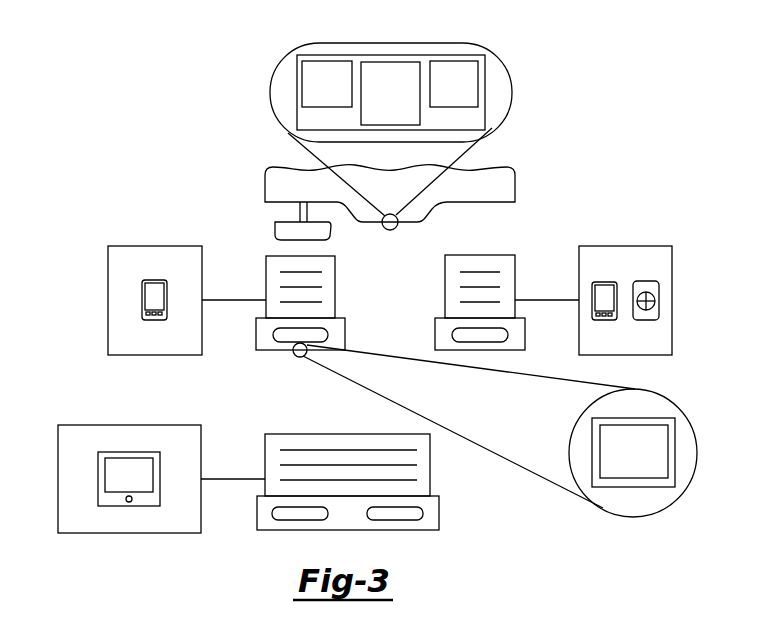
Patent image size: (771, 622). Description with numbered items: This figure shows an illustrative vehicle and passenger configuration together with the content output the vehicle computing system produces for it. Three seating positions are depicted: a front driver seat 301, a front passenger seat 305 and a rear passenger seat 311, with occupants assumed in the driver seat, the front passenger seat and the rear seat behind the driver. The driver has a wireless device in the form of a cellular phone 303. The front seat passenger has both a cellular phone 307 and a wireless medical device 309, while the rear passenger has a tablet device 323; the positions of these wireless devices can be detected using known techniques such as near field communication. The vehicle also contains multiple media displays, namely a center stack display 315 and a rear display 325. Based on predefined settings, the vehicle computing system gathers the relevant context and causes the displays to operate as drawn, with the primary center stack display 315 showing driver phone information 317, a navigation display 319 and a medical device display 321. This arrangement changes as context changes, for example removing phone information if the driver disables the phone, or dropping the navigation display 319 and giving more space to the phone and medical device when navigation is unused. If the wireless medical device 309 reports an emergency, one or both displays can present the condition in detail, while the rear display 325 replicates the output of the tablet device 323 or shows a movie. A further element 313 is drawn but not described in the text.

The front driver seat 301 is at (256, 337).
The cellular phone 303 is at (142, 300).
The front passenger seat 305 is at (435, 335).
The cellular phone 307 is at (592, 292).
The wireless medical device 309 is at (659, 296).
The rear passenger seat 311 is at (439, 512).
The monitor station 313 is at (98, 479).
The center stack display 315 is at (485, 105).
The driver phone information 317 is at (302, 78).
The navigation display 319 is at (392, 61).
The medical device display 321 is at (478, 83).
The tablet device 323 is at (675, 450).
The rear display 325 is at (632, 478).